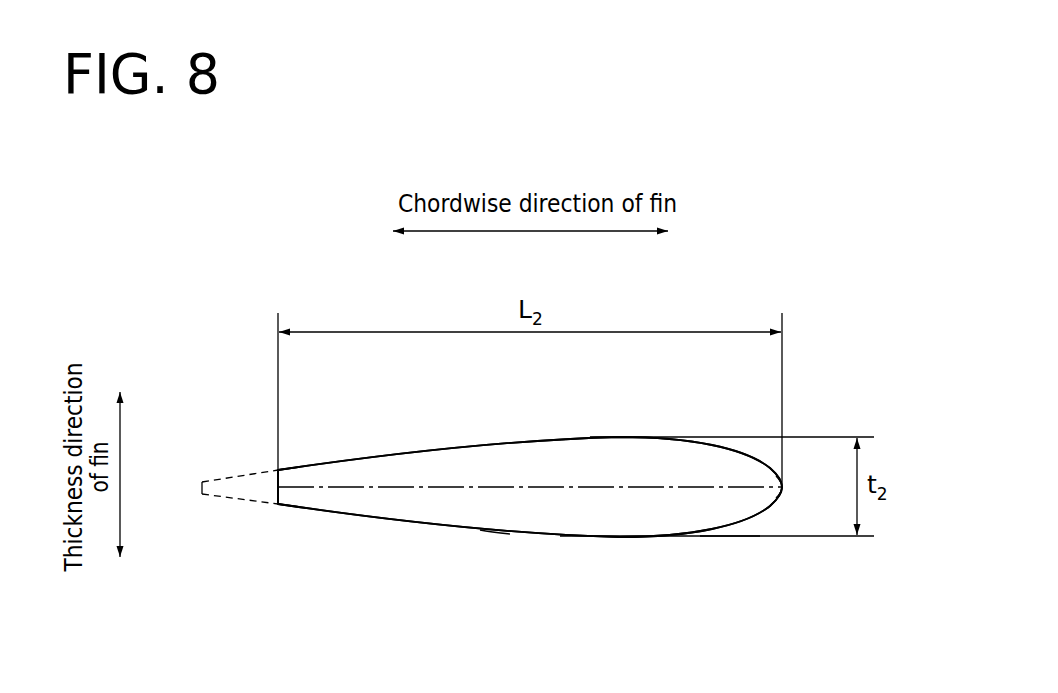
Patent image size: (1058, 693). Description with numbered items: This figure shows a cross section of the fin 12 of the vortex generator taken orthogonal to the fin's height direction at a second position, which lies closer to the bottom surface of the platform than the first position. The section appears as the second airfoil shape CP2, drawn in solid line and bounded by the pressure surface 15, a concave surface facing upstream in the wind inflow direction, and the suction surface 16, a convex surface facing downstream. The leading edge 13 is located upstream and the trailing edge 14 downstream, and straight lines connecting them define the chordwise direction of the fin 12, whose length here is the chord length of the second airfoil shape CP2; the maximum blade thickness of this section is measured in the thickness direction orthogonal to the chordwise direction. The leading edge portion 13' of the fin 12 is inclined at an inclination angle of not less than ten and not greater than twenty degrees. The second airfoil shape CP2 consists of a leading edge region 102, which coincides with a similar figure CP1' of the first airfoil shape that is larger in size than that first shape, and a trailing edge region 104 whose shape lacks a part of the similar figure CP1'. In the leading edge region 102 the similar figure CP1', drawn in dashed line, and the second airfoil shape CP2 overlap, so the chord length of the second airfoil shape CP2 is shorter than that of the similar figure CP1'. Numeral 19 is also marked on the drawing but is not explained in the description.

The fin 12 is at (490, 455).
The pressure surface 15 is at (550, 437).
The suction surface 16 is at (555, 536).
The leading edge 13 is at (810, 503).
The leading edge portion 13' is at (801, 557).
The trailing edge 14 is at (276, 497).
The leading edge upper corner 19 is at (277, 477).
The trailing edge region 104 is at (285, 528).
The leading edge region 102 is at (736, 556).
The similar figure of the first airfoil shape CP1' is at (220, 456).
The second airfoil shape CP2 is at (500, 533).